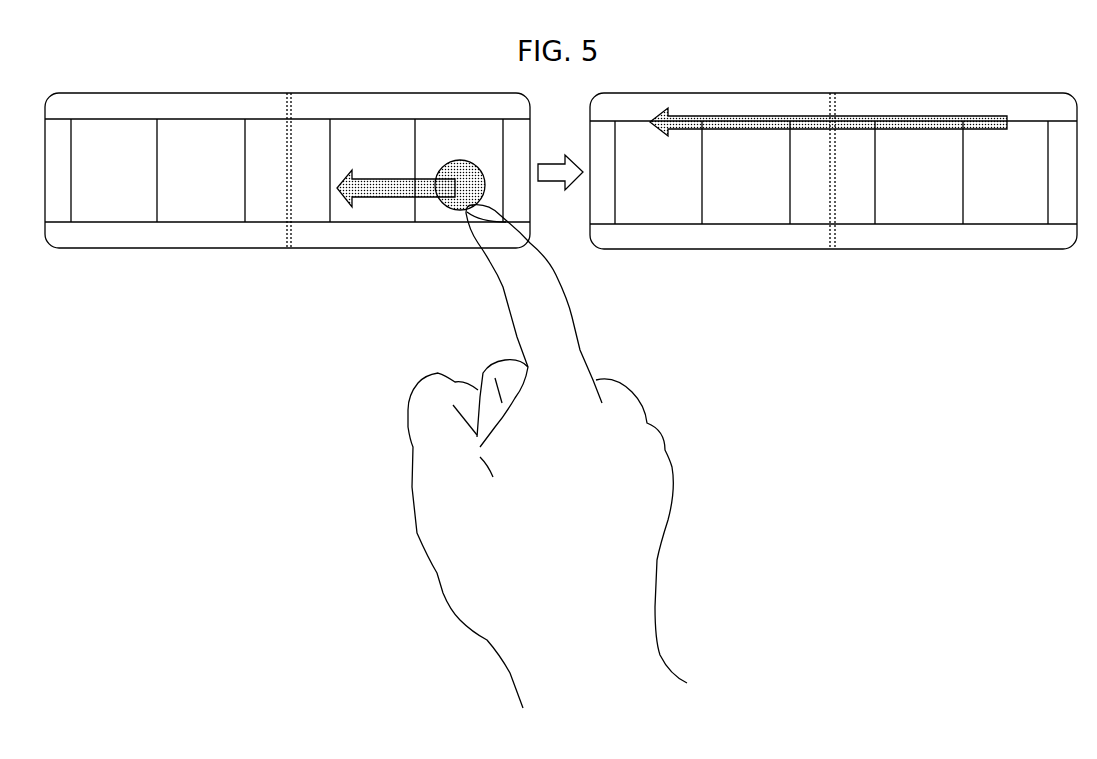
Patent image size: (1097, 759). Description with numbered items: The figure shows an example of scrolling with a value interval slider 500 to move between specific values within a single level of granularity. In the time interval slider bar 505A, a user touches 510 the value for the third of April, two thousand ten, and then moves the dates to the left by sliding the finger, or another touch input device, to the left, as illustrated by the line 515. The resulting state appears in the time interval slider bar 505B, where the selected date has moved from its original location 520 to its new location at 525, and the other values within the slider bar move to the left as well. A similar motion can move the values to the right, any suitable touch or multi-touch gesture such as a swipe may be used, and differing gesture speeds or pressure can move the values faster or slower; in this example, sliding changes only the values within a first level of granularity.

The user interface sequence 500 is at (734, 58).
The time interval slider bar 505A is at (130, 94).
The time interval slider bar 505B is at (988, 97).
The touch 510 is at (443, 208).
The line 515 is at (858, 110).
The original location 520 is at (1010, 215).
The new location 525 is at (678, 213).